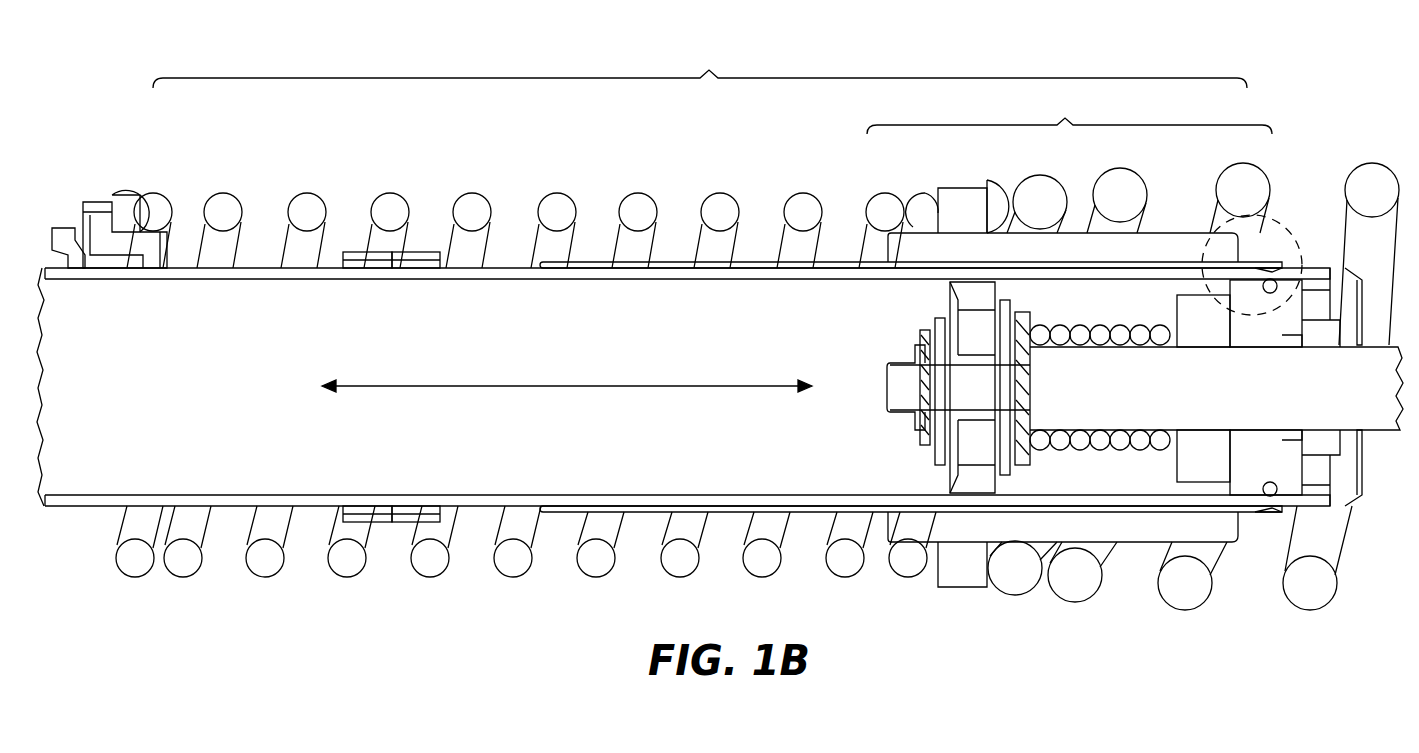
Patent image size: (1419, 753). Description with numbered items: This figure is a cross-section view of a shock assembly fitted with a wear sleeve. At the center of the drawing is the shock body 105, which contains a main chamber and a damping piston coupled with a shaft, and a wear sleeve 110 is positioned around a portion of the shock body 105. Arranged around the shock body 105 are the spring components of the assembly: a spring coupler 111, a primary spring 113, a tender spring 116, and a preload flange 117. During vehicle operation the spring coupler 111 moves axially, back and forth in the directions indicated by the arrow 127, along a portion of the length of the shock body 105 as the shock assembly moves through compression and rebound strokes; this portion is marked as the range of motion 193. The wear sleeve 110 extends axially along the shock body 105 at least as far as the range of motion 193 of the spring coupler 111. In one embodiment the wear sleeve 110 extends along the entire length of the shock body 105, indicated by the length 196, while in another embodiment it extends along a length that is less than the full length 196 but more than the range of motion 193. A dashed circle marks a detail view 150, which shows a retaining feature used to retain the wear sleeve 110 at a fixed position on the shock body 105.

The shock body 105 is at (503, 260).
The wear sleeve 110 is at (837, 262).
The spring coupler 111 is at (955, 190).
The primary spring 113 is at (1130, 185).
The tender spring 116 is at (305, 212).
The preload flange 117 is at (93, 200).
The arrow 127 is at (553, 385).
The detail view 150 is at (1293, 217).
The range of motion 193 is at (1069, 113).
The length 196 is at (700, 67).